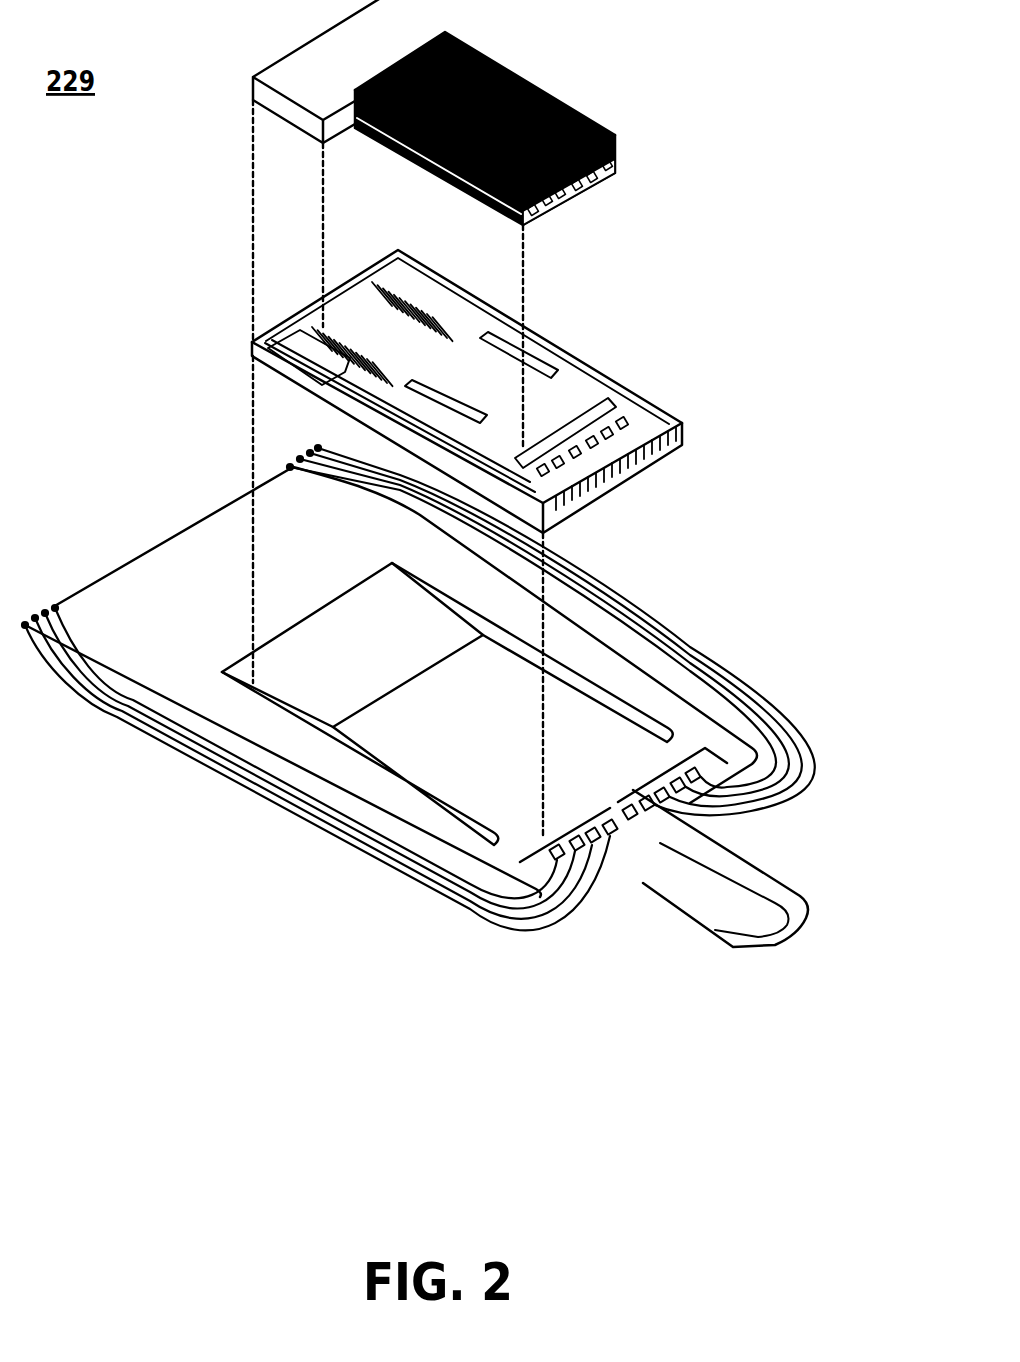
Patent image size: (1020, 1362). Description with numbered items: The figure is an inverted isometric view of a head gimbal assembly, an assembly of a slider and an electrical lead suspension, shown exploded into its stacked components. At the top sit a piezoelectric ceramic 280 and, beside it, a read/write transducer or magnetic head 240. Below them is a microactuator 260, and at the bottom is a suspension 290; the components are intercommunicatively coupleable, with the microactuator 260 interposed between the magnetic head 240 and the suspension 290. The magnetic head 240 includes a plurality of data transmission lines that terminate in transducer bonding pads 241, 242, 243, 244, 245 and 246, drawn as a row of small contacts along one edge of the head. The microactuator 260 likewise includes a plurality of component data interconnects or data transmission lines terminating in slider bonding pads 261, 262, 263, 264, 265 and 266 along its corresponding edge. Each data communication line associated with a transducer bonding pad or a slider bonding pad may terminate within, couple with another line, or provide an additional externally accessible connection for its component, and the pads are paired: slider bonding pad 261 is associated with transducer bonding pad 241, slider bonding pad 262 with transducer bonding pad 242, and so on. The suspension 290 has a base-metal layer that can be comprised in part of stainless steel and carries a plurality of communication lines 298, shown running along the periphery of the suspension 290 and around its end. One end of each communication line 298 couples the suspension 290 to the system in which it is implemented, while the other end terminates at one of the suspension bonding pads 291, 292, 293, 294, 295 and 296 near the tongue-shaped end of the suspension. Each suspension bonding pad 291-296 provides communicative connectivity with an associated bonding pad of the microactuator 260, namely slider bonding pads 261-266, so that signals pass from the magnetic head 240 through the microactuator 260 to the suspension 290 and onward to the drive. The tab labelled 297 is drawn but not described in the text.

The piezoelectric ceramic 280 is at (300, 57).
The read/write transducer (magnetic head) 240 is at (565, 101).
The transducer bonding pad 241 is at (612, 168).
The transducer bonding pad 242 is at (598, 178).
The transducer bonding pad 243 is at (583, 190).
The transducer bonding pad 244 is at (568, 199).
The transducer bonding pad 245 is at (553, 206).
The transducer bonding pad 246 is at (538, 216).
The microactuator 260 is at (605, 378).
The slider bonding pad 261 is at (628, 424).
The slider bonding pad 262 is at (680, 447).
The slider bonding pad 263 is at (612, 440).
The slider bonding pad 264 is at (598, 460).
The slider bonding pad 265 is at (588, 475).
The slider bonding pad 266 is at (570, 478).
The suspension 290 is at (465, 726).
The suspension bonding pad 291 is at (765, 803).
The suspension bonding pad 292 is at (727, 815).
The suspension bonding pad 293 is at (713, 825).
The suspension bonding pad 294 is at (610, 847).
The suspension bonding pad 295 is at (597, 847).
The suspension bonding pad 296 is at (580, 847).
The connector tab 297 is at (697, 860).
The communication lines 298 is at (722, 688).